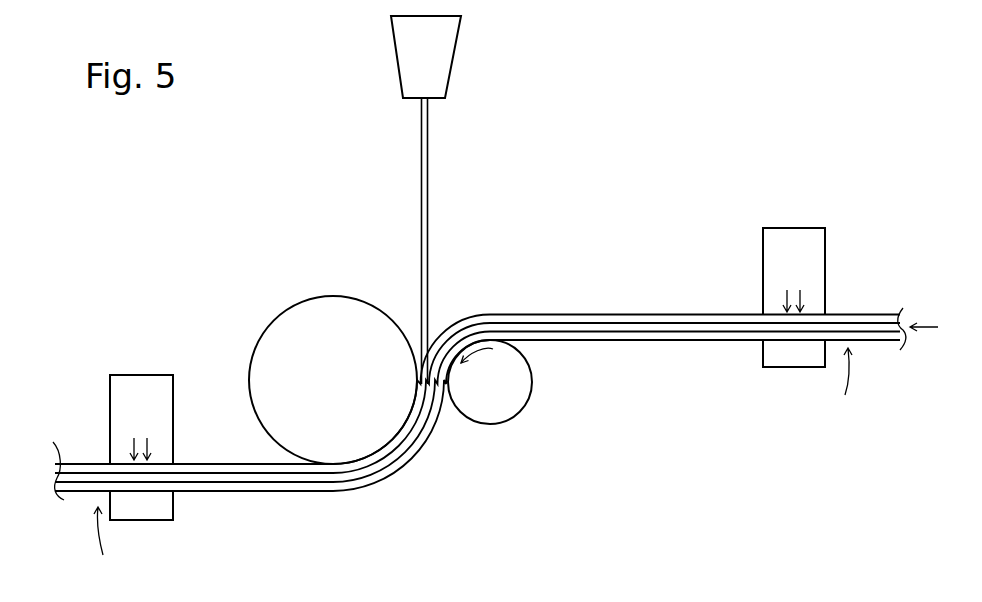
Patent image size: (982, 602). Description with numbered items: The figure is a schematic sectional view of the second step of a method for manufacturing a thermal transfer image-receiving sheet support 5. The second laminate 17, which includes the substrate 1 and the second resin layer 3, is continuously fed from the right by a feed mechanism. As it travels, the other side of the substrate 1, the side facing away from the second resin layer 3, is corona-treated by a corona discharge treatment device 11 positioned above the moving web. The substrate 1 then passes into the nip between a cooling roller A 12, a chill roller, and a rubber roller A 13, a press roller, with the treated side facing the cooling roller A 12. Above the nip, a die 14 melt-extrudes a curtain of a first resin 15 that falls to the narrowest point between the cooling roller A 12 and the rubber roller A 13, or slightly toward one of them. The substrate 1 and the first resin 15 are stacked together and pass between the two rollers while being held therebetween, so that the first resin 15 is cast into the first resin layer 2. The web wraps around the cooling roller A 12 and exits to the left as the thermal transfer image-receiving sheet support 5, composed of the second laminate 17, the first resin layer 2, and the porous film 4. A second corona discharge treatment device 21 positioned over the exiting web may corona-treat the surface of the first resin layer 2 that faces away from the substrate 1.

The substrate 1 is at (57, 478).
The first resin layer 2 is at (80, 464).
The second resin layer 3 is at (57, 485).
The porous film 4 is at (82, 492).
The thermal transfer image-receiving sheet support 5 is at (102, 544).
The corona discharge treatment device 11 is at (797, 228).
The cooling roller A 12 is at (277, 367).
The rubber roller A 13 is at (506, 402).
The die 14 is at (397, 55).
The first resin 15 is at (430, 165).
The second laminate 17 is at (846, 383).
The corona discharge treatment device 21 is at (143, 375).